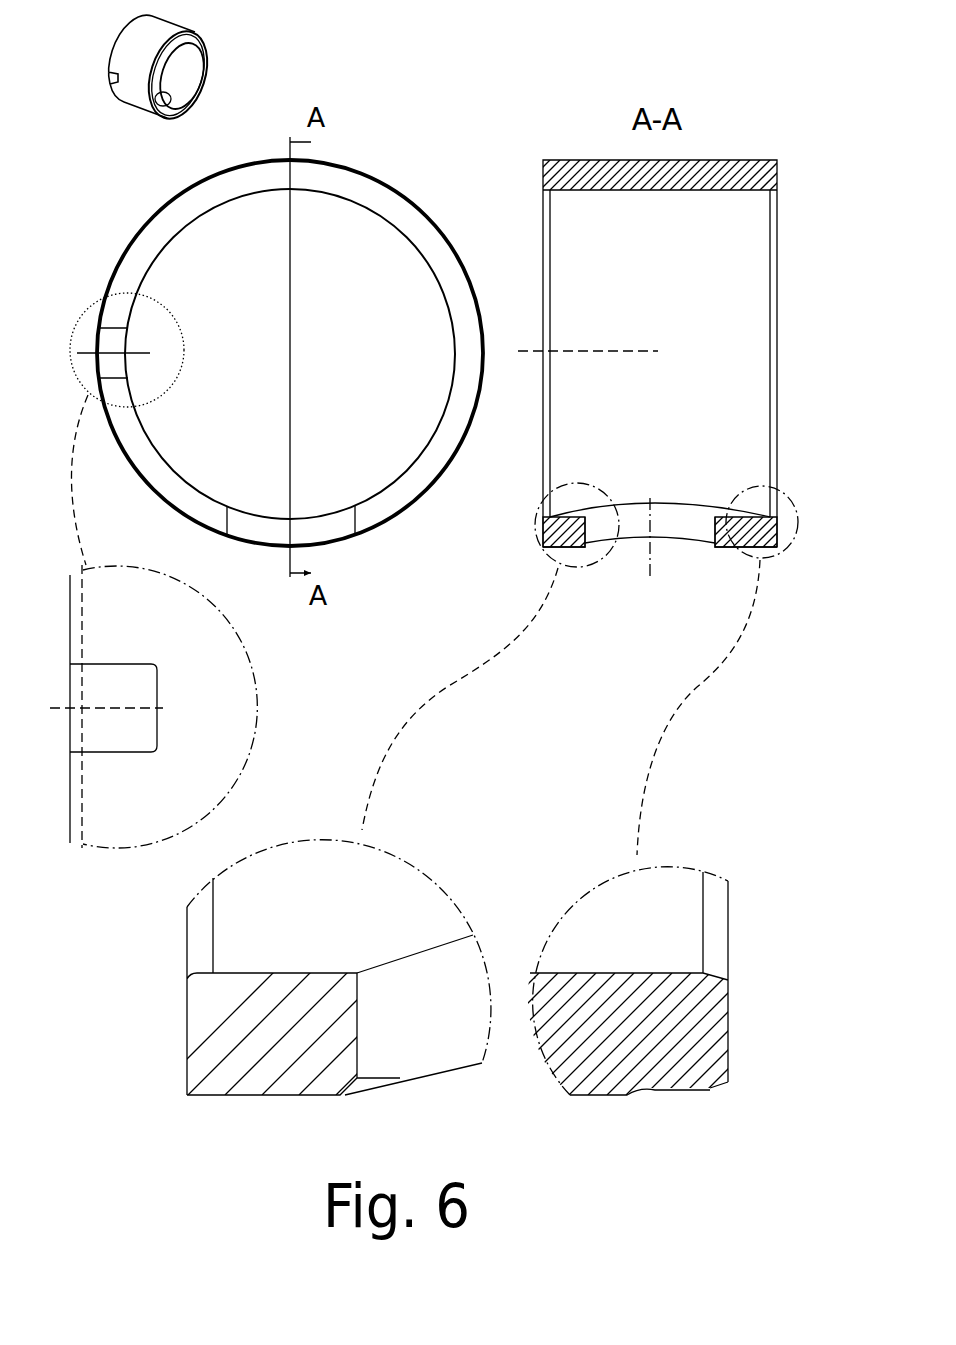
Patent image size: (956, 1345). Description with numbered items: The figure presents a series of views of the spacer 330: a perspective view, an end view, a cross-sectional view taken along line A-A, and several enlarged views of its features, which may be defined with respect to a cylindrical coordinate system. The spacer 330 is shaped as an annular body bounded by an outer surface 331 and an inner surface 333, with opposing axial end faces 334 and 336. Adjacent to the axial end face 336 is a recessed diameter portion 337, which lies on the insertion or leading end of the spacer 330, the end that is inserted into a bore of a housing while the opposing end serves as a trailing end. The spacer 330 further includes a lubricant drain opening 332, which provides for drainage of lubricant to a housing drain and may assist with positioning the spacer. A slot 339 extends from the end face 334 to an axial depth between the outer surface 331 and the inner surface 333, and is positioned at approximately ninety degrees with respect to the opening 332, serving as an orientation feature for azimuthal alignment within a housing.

The spacer 330 is at (207, 20).
The outer surface 331 is at (365, 173).
The lubricant drain opening 332 is at (667, 503).
The inner surface of ring 333 is at (390, 223).
The axial end face 334 is at (527, 177).
The axial end face 336 is at (788, 177).
The recessed diameter portion 337 is at (677, 1092).
The slot 339 is at (118, 664).